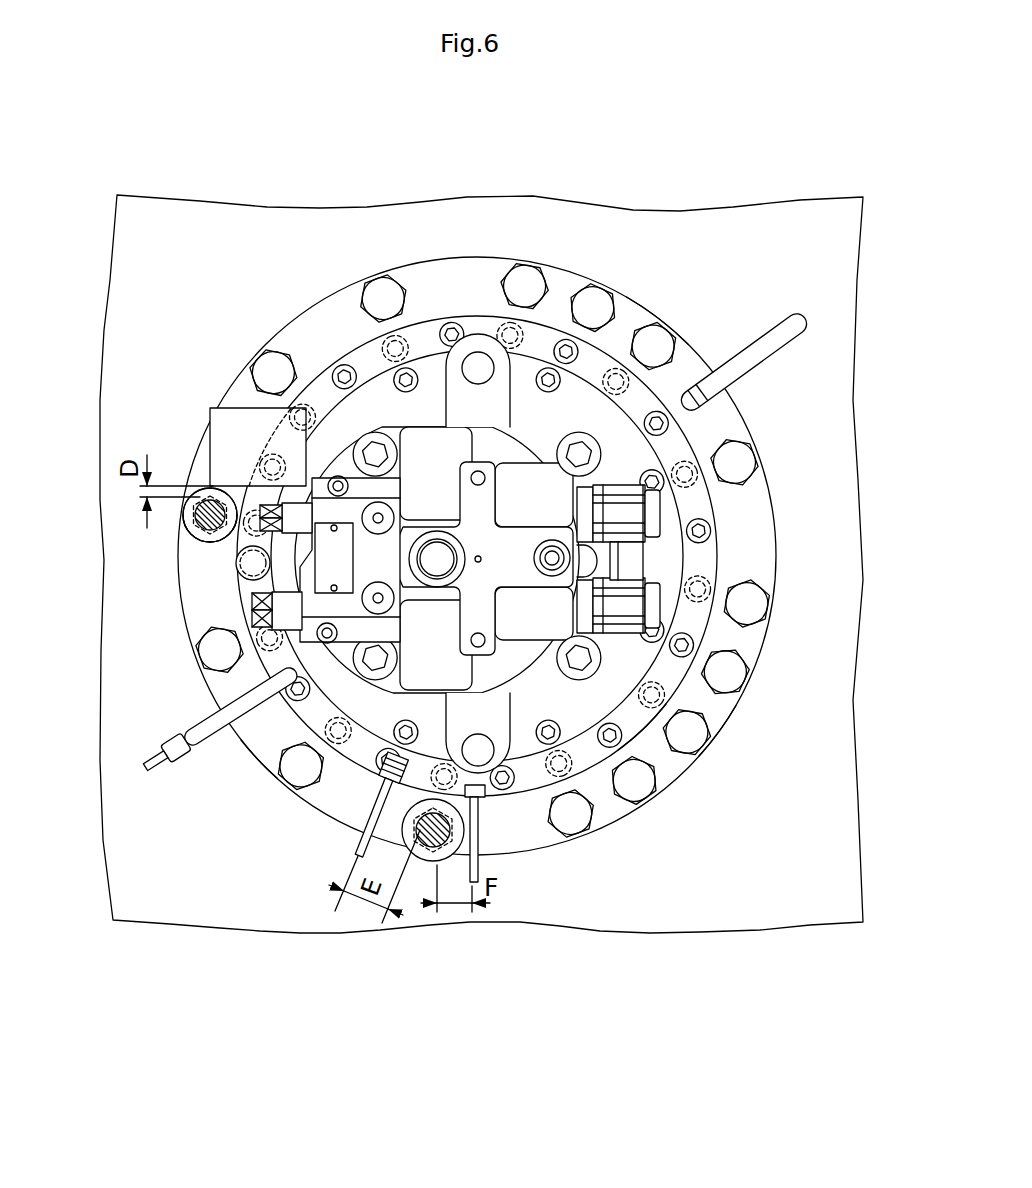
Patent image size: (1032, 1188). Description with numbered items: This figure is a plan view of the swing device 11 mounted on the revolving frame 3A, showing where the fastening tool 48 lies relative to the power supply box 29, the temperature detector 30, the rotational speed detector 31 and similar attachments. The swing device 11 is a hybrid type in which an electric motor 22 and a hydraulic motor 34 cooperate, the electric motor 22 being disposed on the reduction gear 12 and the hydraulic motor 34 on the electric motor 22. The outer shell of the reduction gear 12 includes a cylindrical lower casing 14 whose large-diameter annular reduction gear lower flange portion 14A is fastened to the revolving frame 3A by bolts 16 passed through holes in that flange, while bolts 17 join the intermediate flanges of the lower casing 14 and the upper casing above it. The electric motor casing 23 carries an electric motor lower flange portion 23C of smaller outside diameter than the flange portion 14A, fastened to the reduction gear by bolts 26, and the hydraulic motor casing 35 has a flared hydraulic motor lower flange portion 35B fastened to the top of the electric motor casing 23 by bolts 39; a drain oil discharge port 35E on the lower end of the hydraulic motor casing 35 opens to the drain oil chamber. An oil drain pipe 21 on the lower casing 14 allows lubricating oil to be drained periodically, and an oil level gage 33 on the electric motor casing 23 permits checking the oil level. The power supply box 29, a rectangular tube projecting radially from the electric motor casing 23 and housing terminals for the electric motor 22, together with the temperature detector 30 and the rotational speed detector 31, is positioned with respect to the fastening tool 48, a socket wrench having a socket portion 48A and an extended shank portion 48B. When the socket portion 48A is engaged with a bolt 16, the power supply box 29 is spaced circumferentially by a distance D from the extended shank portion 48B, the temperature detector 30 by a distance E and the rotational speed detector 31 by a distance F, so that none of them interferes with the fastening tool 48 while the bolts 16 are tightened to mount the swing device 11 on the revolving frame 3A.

The revolving frame 3A is at (800, 885).
The swing device 11 is at (675, 302).
The reduction gear 12 is at (730, 740).
The lower casing 14 is at (237, 373).
The reduction gear lower flange portion 14A is at (300, 337).
The bolts 16 is at (387, 300).
The bolts 17 is at (700, 590).
The oil drain pipe 21 is at (772, 338).
The electric motor 22 is at (243, 755).
The electric motor casing 23 is at (650, 740).
The electric motor lower flange portion 23C is at (590, 755).
The bolts 26 is at (347, 370).
The power supply box 29 is at (237, 450).
The temperature detector 30 is at (388, 773).
The rotational speed detector 31 is at (483, 805).
The oil level gage 33 is at (205, 725).
The hydraulic motor 34 is at (575, 440).
The hydraulic motor casing 35 is at (423, 357).
The hydraulic motor lower flange portion 35B is at (440, 378).
The drain oil discharge port 35E is at (488, 348).
The bolts 39 is at (570, 362).
The fastening tool 48 is at (432, 849).
The socket portion 48A is at (205, 542).
The extended shank portion 48B is at (198, 503).